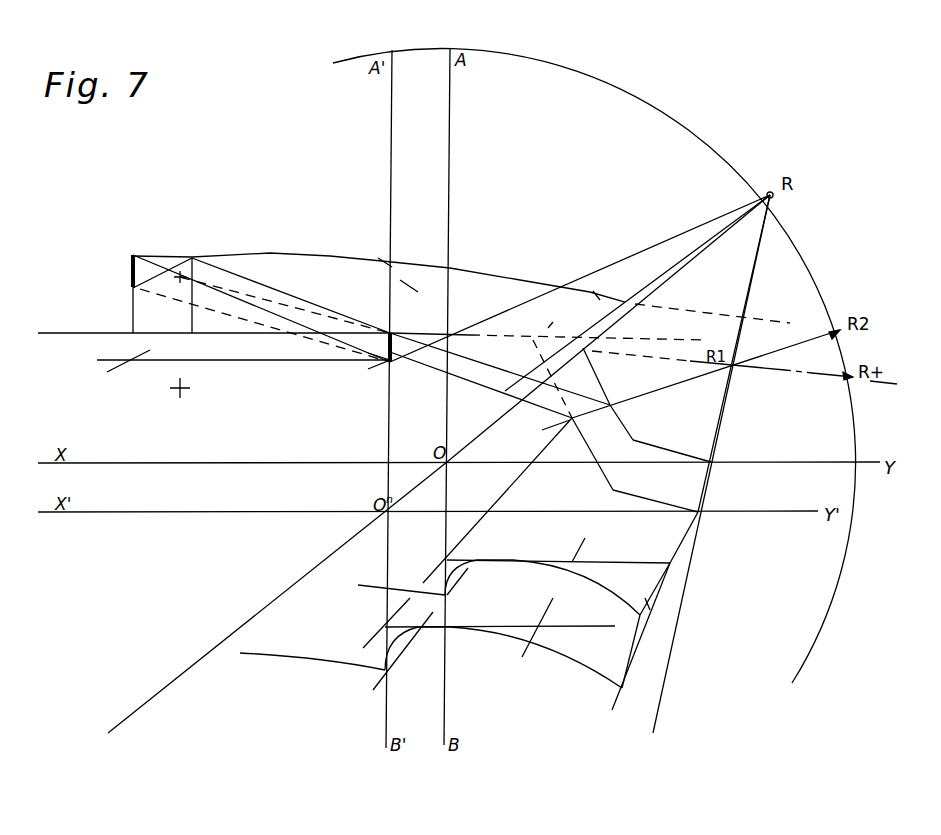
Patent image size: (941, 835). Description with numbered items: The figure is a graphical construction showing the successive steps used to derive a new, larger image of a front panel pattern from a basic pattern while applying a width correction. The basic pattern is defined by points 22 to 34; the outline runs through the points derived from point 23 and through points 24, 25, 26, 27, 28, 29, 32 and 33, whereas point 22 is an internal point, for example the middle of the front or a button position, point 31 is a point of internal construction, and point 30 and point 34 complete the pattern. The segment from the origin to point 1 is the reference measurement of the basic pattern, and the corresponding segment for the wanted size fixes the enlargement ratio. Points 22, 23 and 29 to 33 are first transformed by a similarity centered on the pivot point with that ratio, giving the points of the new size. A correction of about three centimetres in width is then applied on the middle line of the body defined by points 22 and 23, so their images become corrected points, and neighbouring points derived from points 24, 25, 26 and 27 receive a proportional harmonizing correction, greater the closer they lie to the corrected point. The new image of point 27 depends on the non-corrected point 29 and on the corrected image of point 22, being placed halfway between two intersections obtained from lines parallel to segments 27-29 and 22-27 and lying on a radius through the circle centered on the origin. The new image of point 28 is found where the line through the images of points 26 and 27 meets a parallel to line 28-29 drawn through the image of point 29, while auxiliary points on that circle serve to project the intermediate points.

The reference measurement end point 1 is at (691, 464).
The internal middle-line point 22 is at (404, 306).
The middle-line pattern point 23 is at (243, 300).
The outline point 24 is at (379, 269).
The outline point 25 is at (647, 293).
The outline point 26 is at (681, 370).
The outline point 27 is at (631, 456).
The outline point 28 is at (604, 419).
The non-corrected outline point 29 is at (662, 476).
The pattern point 30 is at (516, 598).
The internal construction point 31 is at (354, 629).
The outline point 32 is at (512, 613).
The outline point 33 is at (638, 651).
The pattern point 34 is at (665, 584).